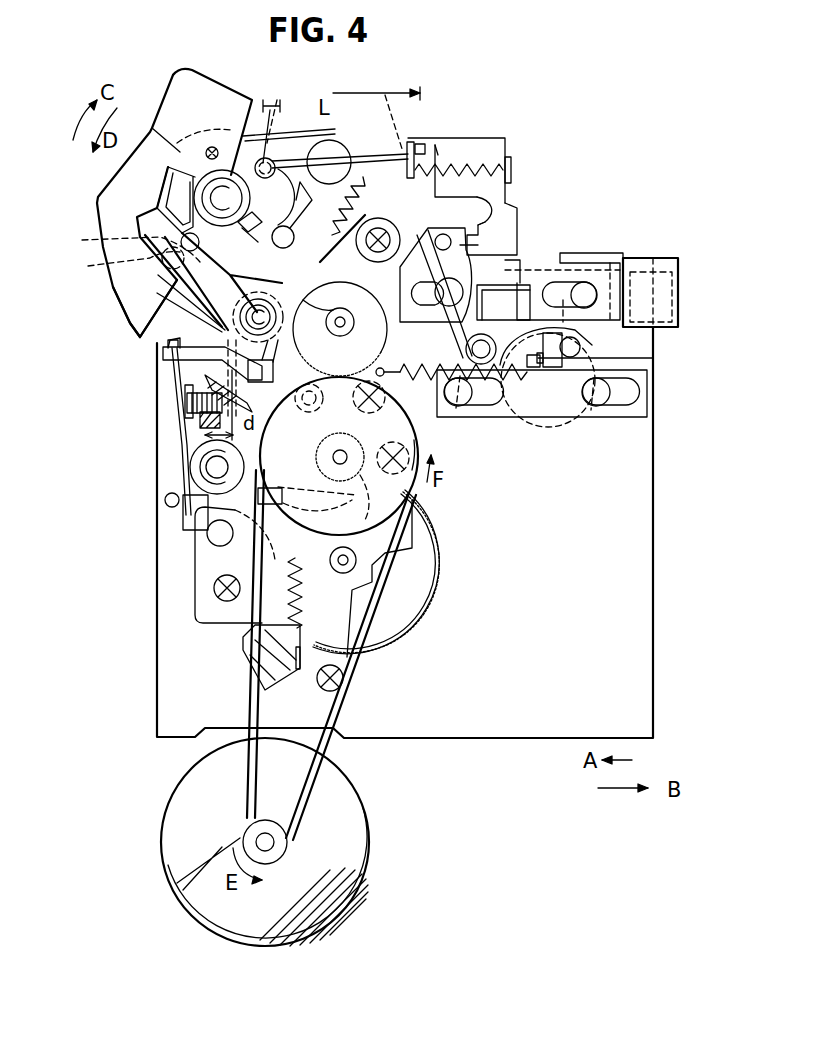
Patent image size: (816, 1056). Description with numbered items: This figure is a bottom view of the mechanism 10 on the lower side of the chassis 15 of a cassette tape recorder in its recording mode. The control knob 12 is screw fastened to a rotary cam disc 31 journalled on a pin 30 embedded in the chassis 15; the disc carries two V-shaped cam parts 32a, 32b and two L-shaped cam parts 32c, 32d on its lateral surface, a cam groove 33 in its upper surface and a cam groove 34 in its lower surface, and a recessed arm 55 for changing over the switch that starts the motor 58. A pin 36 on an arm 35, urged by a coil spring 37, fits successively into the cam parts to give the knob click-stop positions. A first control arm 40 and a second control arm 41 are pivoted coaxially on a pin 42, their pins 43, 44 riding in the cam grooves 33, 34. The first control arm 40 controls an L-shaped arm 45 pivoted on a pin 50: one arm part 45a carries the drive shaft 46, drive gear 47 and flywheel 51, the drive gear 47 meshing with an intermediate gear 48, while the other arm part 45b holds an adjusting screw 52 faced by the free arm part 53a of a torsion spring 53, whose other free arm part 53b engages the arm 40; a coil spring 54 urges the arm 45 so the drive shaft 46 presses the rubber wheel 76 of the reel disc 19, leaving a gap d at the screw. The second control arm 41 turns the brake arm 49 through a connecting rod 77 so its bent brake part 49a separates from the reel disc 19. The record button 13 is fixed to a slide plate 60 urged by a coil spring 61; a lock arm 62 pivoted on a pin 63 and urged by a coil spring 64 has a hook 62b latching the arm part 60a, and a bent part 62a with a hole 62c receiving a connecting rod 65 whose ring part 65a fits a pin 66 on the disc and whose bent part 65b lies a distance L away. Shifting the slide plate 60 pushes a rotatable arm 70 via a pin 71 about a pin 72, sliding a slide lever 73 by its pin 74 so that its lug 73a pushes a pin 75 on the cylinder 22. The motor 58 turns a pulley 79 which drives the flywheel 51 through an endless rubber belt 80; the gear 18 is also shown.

The shutter mechanism 10 is at (496, 85).
The control knob 12 is at (173, 82).
The record button 13 is at (655, 258).
The chassis 15 is at (653, 594).
The gear 18 is at (330, 342).
The reel disc 19 is at (415, 575).
The cylinder 22 is at (544, 428).
The pin 30 is at (188, 152).
The rotary cam disc 31 is at (289, 137).
The V-shaped cam part 32a is at (313, 205).
The V-shaped cam part 32b is at (280, 225).
The L-shaped cam part 32c is at (269, 308).
The L-shaped cam part 32d is at (177, 280).
The cam groove 33 is at (130, 245).
The cam groove 34 is at (157, 208).
The arm 35 is at (332, 224).
The pin 36 is at (273, 216).
The coil spring 37 is at (366, 199).
The first control arm 40 is at (150, 302).
The second control arm 41 is at (207, 308).
The pin 42 is at (340, 309).
The pin 43 is at (124, 266).
The pin 44 is at (209, 198).
The L-shaped arm 45 is at (180, 460).
The arm part 45a is at (317, 511).
The arm part 45b is at (205, 380).
The drive shaft 46 is at (340, 465).
The drive gear 47 is at (356, 476).
The intermediate gear 48 is at (355, 430).
The brake arm 49 is at (197, 550).
The bent brake part 49a is at (282, 682).
The pin 50 is at (205, 475).
The flywheel 51 is at (419, 448).
The adjusting screw 52 is at (185, 400).
The torsion spring 53 is at (220, 384).
The free arm part 53a is at (200, 420).
The free arm part 53b is at (248, 437).
The coil spring 54 is at (300, 585).
The recessed arm 55 is at (237, 235).
The motor 58 is at (355, 836).
The slide plate 60 is at (588, 262).
The arm part 60a is at (485, 222).
The coil spring 61 is at (413, 380).
The lock arm 62 is at (482, 198).
The bent part 62a is at (420, 140).
The hook 62b is at (478, 240).
The hole 62c is at (383, 111).
The pin 63 is at (375, 262).
The coil spring 64 is at (485, 170).
The connecting rod 65 is at (333, 142).
The ring part 65a is at (284, 108).
The bent part 65b is at (428, 152).
The pin 66 is at (258, 160).
The rotatable arm 70 is at (480, 297).
The pin 71 is at (443, 234).
The pin 72 is at (435, 325).
The slide lever 73 is at (592, 418).
The lug 73a is at (582, 339).
The pin 74 is at (495, 330).
The pin 75 is at (653, 358).
The rubber wheel 76 is at (412, 612).
The connecting rod 77 is at (175, 440).
The pulley 79 is at (284, 852).
The endless rubber belt 80 is at (332, 744).